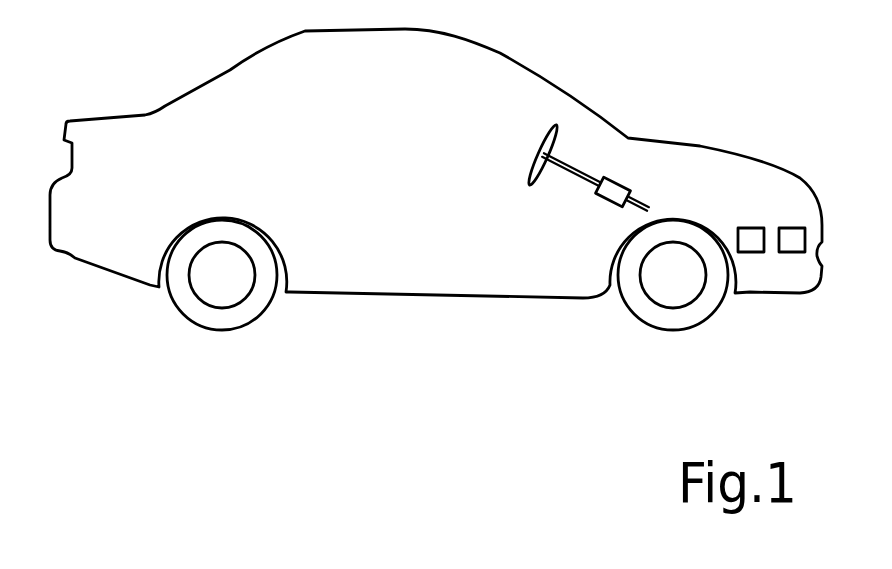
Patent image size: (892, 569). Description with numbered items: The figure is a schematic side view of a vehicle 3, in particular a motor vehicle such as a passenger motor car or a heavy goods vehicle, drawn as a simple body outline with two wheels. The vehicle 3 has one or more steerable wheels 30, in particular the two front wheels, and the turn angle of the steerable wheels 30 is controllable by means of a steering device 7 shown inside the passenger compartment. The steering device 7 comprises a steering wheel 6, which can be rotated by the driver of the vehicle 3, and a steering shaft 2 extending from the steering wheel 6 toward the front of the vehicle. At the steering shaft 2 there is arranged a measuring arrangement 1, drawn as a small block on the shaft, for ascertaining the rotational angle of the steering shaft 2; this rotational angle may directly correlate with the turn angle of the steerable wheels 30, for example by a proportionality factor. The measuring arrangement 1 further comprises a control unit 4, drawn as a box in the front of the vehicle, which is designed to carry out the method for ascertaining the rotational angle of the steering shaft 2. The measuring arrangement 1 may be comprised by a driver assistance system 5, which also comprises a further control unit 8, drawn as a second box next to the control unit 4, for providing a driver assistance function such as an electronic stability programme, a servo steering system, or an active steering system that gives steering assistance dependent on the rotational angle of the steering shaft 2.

The measuring arrangement 1 is at (598, 217).
The steering shaft 2 is at (563, 175).
The vehicle 3 is at (386, 341).
The control unit 4 is at (751, 252).
The driver assistance system 5 is at (774, 231).
The steering wheel 6 is at (524, 140).
The steering device 7 is at (560, 162).
The further control unit 8 is at (792, 252).
The steerable wheels 30 is at (662, 317).